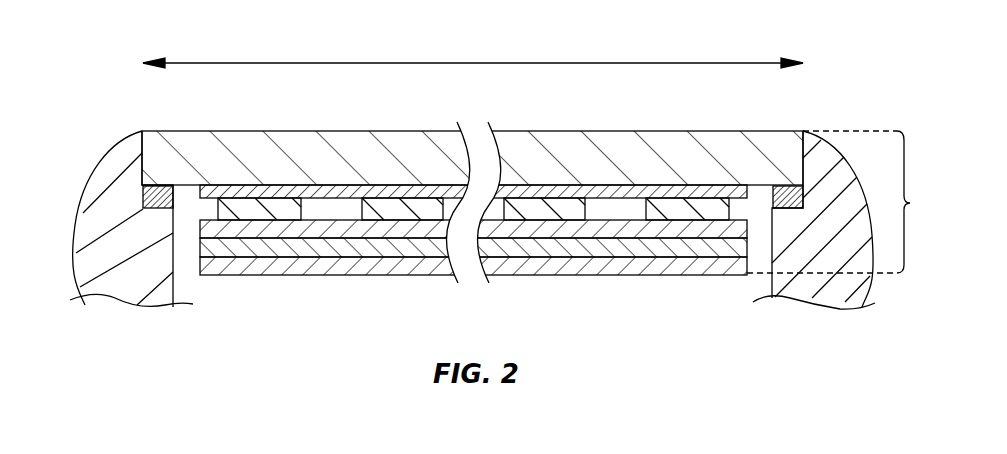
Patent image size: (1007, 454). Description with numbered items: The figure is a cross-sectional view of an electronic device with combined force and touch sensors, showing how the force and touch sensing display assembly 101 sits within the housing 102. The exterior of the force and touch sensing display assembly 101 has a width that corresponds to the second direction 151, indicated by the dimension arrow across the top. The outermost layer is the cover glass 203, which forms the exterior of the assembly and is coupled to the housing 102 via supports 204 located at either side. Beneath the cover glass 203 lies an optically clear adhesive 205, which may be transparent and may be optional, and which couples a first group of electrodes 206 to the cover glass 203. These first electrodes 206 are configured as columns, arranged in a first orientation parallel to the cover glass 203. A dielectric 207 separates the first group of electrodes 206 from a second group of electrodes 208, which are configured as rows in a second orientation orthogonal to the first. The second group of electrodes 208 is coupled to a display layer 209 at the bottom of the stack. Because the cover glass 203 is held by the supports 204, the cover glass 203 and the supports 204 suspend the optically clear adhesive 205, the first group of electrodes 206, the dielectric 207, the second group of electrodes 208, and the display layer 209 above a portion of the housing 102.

The force and touch sensing display assembly 101 is at (848, 202).
The housing 102 is at (84, 199).
The second direction 151 is at (548, 62).
The cover glass 203 is at (405, 131).
The supports 204 is at (781, 184).
The optically clear adhesive 205 is at (327, 192).
The first group of electrodes 206 is at (248, 212).
The dielectric 207 is at (233, 235).
The second group of electrodes 208 is at (298, 247).
The display layer 209 is at (348, 266).